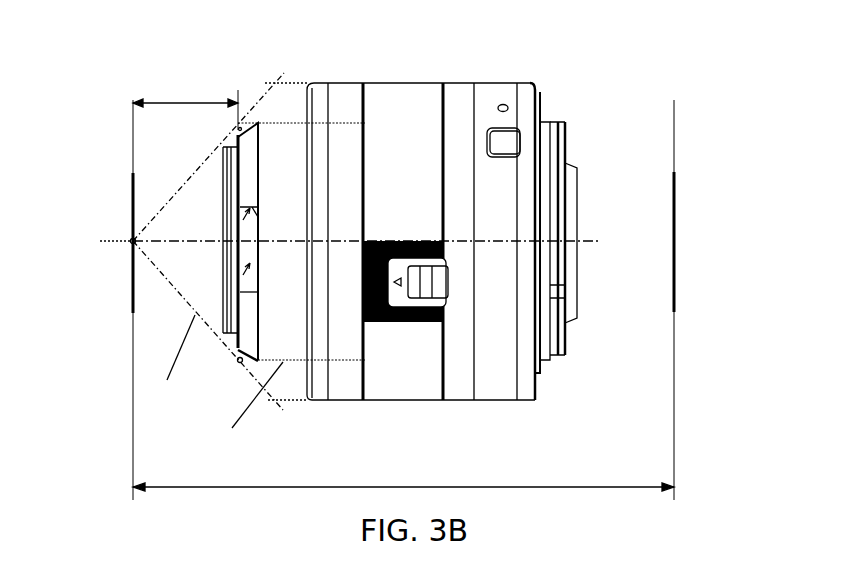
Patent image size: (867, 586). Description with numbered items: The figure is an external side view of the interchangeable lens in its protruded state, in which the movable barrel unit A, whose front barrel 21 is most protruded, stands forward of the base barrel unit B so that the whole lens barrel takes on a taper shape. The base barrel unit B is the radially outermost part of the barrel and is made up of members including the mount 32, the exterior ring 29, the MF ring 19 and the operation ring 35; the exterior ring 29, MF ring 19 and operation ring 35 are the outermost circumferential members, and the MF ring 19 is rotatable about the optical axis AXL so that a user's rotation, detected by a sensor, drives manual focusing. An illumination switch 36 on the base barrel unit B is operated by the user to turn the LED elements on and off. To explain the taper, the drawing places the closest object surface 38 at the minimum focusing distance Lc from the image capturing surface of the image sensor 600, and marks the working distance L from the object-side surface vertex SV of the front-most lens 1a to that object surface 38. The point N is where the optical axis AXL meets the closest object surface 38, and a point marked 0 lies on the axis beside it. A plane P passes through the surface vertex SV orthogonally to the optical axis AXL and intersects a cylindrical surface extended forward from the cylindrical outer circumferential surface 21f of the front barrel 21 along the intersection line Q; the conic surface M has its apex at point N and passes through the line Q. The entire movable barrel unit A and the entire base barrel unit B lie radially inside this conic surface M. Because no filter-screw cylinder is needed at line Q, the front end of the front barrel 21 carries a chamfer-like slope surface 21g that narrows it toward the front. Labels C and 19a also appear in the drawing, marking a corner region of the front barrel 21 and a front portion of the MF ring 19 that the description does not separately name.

The object surface 38 is at (132, 283).
The point N is at (124, 230).
The origin 0 is at (107, 243).
The optical axis AXL is at (163, 240).
The image sensor 600 is at (676, 270).
The working distance L is at (185, 106).
The minimum focusing distance Lc is at (403, 478).
The slope surface 21g is at (208, 146).
The cylindrical outer circumferential surface 21f is at (208, 348).
The conic surface M is at (172, 355).
The plane P is at (237, 128).
The intersection line Q is at (232, 372).
The chamfer portion C is at (243, 368).
The movable barrel unit A is at (292, 381).
The base barrel unit B is at (465, 407).
The front-most lens 1a is at (245, 275).
The front barrel 21 is at (268, 137).
The object-side surface vertex SV is at (237, 248).
The front end of fixed barrel 19a is at (310, 83).
The MF ring 19 is at (337, 102).
The operation ring 35 is at (393, 125).
The exterior ring 29 is at (488, 98).
The mount 32 is at (543, 125).
The illumination switch 36 is at (503, 147).